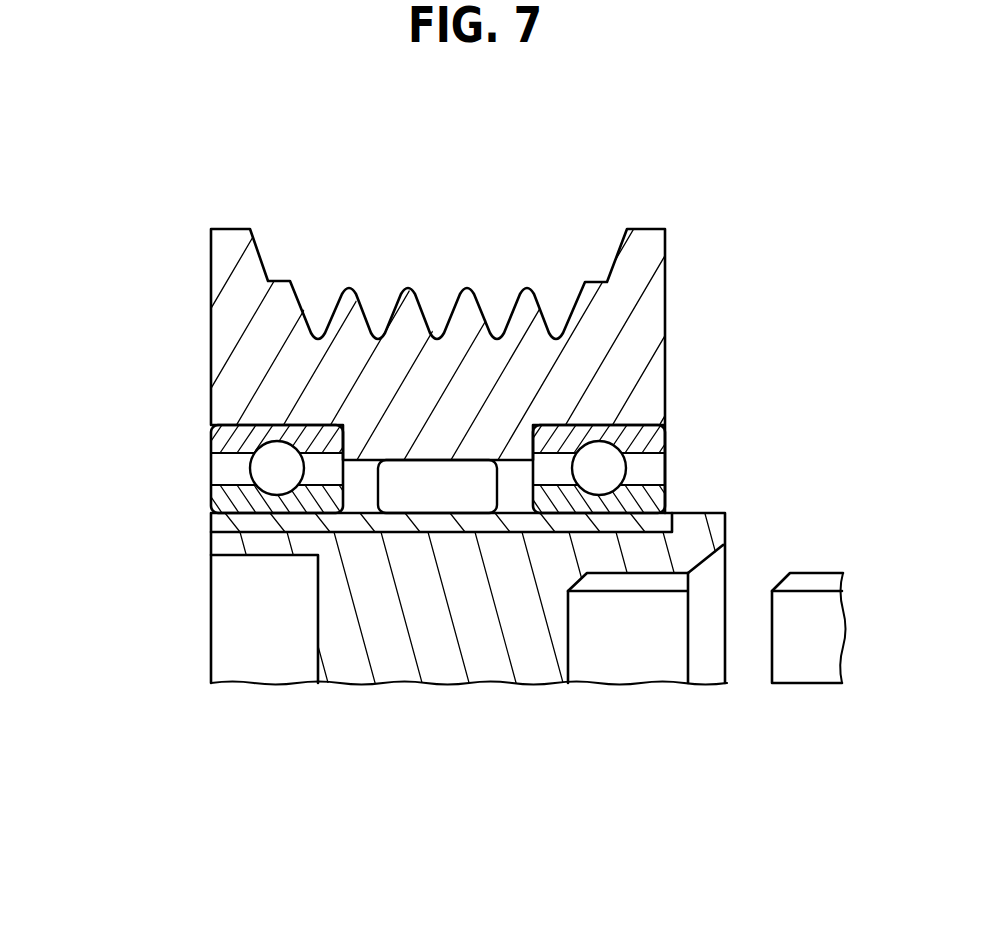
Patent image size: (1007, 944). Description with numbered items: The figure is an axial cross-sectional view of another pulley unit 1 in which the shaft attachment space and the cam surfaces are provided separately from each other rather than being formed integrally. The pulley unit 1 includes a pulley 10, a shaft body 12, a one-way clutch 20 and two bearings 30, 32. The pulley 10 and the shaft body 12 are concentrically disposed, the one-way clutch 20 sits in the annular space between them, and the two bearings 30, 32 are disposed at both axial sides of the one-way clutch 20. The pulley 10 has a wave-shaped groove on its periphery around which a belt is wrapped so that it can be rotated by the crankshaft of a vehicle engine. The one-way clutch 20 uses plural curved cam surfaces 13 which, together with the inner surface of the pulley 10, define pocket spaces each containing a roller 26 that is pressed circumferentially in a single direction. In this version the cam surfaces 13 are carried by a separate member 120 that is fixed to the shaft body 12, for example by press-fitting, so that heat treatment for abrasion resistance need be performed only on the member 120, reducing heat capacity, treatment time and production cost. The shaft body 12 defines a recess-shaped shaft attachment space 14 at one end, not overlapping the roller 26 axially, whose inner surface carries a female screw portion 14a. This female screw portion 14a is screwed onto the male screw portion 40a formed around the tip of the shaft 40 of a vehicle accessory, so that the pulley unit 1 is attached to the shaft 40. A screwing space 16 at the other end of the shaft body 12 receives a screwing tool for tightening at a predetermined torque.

The pulley unit 1 is at (699, 205).
The pulley 10 is at (638, 283).
The shaft body 12 is at (683, 523).
The cam surfaces 13 is at (365, 510).
The shaft attachment space 14 is at (606, 690).
The female screw portion 14a is at (590, 580).
The screwing space 16 is at (225, 612).
The one-way clutch 20 is at (452, 437).
The roller 26 is at (412, 473).
The bearing 30 is at (215, 433).
The bearing 32 is at (667, 445).
The shaft 40 is at (822, 626).
The male screw portion 40a is at (830, 580).
The member having cam surfaces 120 is at (222, 517).